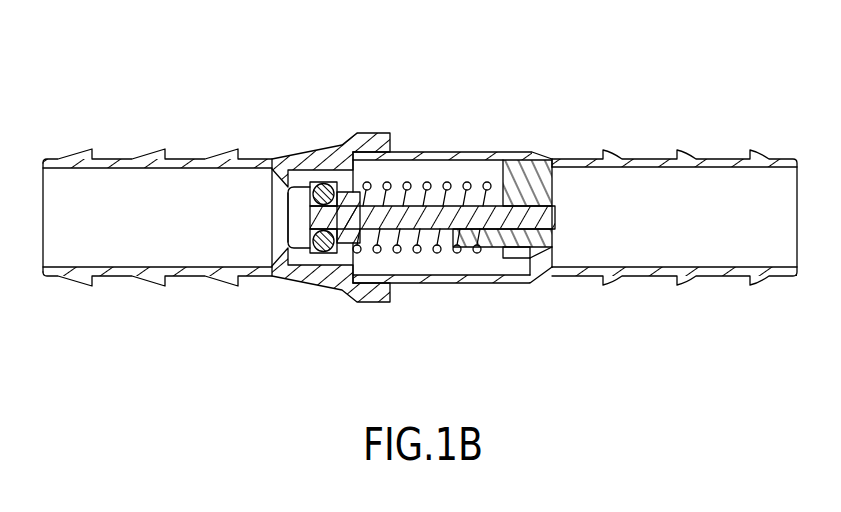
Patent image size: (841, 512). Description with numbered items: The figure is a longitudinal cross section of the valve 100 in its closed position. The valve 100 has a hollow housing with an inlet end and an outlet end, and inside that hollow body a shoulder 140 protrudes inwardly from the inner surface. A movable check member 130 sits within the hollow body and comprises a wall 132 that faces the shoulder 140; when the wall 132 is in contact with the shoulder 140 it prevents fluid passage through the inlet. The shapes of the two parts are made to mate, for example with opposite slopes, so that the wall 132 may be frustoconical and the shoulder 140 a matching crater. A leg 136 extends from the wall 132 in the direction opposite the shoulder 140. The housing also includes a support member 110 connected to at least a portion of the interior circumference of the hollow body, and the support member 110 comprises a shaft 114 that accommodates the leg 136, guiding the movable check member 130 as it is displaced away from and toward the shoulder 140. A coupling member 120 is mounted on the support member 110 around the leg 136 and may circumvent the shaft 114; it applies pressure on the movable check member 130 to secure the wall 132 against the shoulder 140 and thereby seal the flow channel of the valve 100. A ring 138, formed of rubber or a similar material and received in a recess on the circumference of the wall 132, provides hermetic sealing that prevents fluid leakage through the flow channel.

The valve 100 is at (140, 77).
The support member 110 is at (513, 190).
The shaft 114 is at (480, 247).
The coupling member 120 is at (426, 188).
The movable check member 130 is at (373, 232).
The wall 132 is at (303, 223).
The leg 136 is at (540, 217).
The ring 138 is at (323, 181).
The shoulder 140 is at (285, 282).